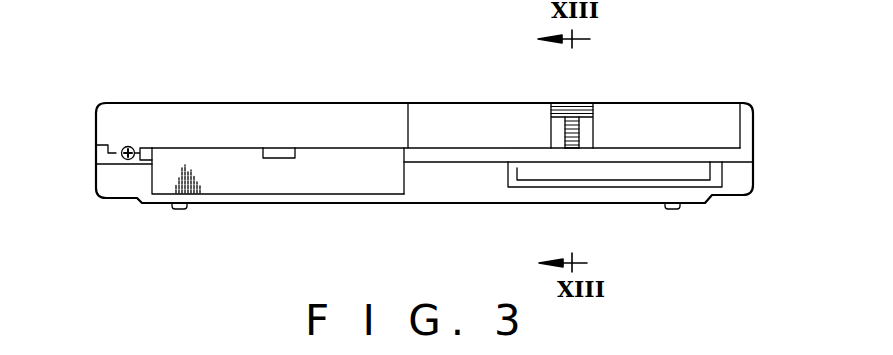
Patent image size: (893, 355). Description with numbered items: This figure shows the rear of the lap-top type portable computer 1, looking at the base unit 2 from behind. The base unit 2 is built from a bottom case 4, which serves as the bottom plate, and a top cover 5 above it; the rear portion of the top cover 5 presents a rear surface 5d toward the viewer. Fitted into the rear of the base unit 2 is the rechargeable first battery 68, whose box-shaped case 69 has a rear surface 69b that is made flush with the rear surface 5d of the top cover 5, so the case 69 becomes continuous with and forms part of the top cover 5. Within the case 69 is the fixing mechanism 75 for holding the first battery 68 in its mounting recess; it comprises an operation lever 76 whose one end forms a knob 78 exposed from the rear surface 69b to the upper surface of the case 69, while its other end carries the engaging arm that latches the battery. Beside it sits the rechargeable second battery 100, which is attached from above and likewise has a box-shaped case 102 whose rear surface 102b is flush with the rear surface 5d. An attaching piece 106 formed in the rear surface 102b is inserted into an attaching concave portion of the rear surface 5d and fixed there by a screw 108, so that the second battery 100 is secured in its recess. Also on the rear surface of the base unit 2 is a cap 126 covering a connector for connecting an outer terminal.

The portable computer 1 is at (232, 212).
The base unit 2 is at (801, 121).
The bottom case 4 is at (742, 178).
The top cover 5 is at (743, 136).
The rear surface 5d is at (428, 165).
The first battery 68 is at (463, 122).
The case 69 is at (650, 117).
The rear surface 69b is at (695, 120).
The fixing mechanism 75 is at (573, 149).
The operation lever 76 is at (583, 102).
The knob 78 is at (558, 102).
The second battery 100 is at (312, 122).
The case 102 is at (236, 118).
The rear surface 102b is at (360, 122).
The attaching piece 106 is at (96, 157).
The screw 108 is at (132, 147).
The cap 126 is at (310, 197).